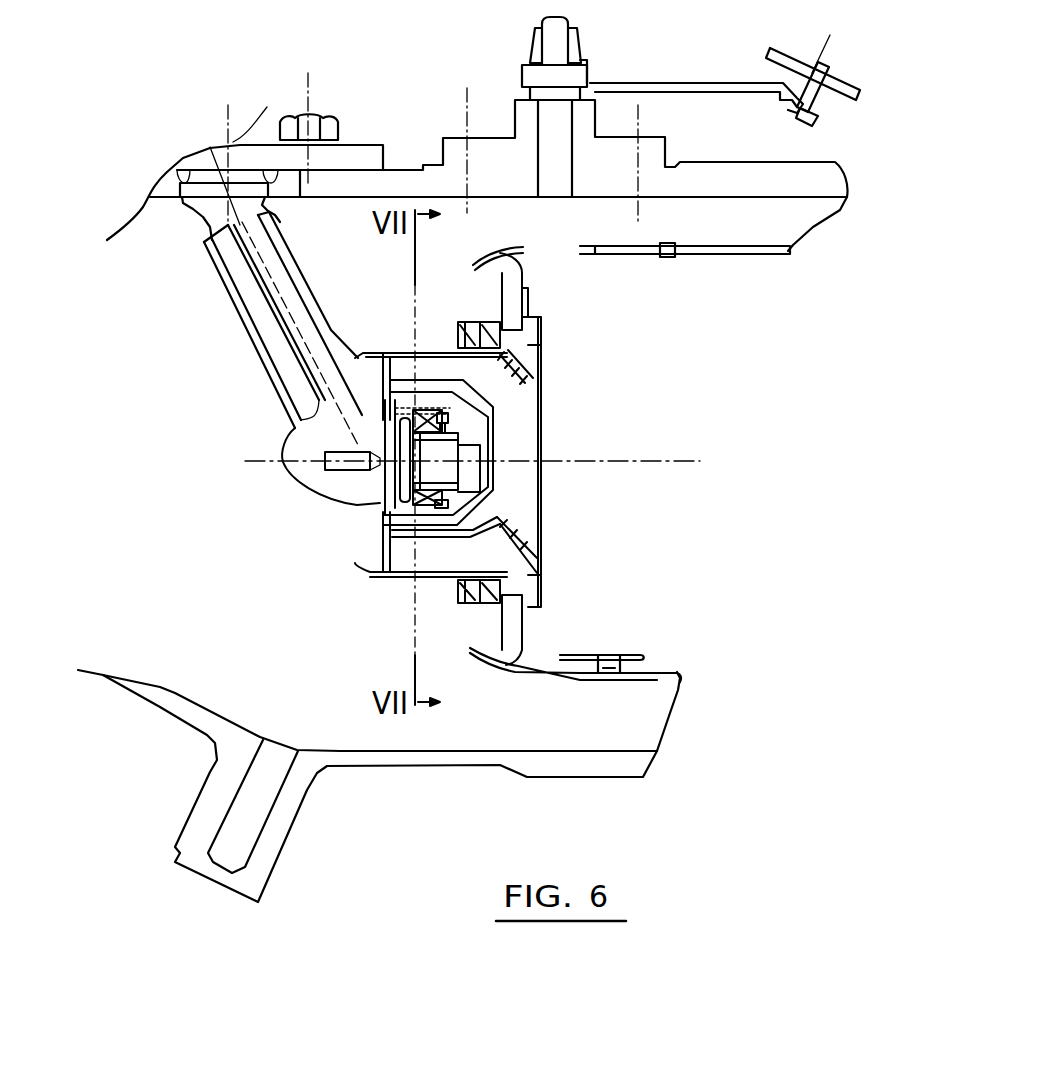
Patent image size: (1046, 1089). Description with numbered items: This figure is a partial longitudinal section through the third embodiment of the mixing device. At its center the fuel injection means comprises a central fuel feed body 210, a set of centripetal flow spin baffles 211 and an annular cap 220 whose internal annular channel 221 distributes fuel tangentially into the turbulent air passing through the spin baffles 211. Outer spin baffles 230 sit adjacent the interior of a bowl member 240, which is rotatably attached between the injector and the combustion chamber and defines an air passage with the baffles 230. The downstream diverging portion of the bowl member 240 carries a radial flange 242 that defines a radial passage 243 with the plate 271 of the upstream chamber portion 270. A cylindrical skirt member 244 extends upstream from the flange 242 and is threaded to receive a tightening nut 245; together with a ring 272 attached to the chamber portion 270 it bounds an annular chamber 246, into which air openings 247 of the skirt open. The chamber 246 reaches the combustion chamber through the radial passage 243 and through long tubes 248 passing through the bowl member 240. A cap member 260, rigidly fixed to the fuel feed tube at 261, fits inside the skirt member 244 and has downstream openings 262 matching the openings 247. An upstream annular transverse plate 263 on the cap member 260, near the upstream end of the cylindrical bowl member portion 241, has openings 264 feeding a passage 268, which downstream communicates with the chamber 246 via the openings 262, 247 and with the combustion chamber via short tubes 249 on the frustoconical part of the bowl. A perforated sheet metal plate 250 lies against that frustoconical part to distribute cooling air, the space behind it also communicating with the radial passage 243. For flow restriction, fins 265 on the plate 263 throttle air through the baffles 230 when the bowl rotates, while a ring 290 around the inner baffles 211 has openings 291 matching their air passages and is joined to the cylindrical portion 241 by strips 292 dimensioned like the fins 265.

The central fuel feed body 210 is at (398, 468).
The centripetal flow spin baffles 211 is at (392, 500).
The annular cap 220 is at (392, 507).
The internal annular channel 221 is at (400, 522).
The outer spin baffles 230 is at (440, 505).
The bowl member 240 is at (503, 526).
The cylindrical bowl member portion 241 is at (395, 575).
The radial flange 242 is at (541, 344).
The radial passage 243 is at (541, 328).
The cylindrical skirt member 244 is at (471, 322).
The tightening nut 245 is at (467, 322).
The annular chamber 246 is at (541, 587).
The air openings 247 is at (541, 352).
The long tubes 248 is at (541, 360).
The short tubes 249 is at (537, 551).
The perforated sheet metal plate 250 is at (527, 375).
The cap member 260 is at (372, 350).
The attachment of cap member to fuel feed tube 261 is at (358, 345).
The openings 262 is at (530, 362).
The upstream annular transverse plate 263 is at (395, 383).
The openings 264 is at (395, 360).
The fins 265 is at (385, 408).
The passage 268 is at (423, 367).
The upstream chamber portion 270 is at (524, 268).
The plate 271 is at (610, 256).
The ring 272 is at (486, 262).
The ring 290 is at (300, 470).
The openings 291 is at (345, 463).
The strips 292 is at (245, 461).